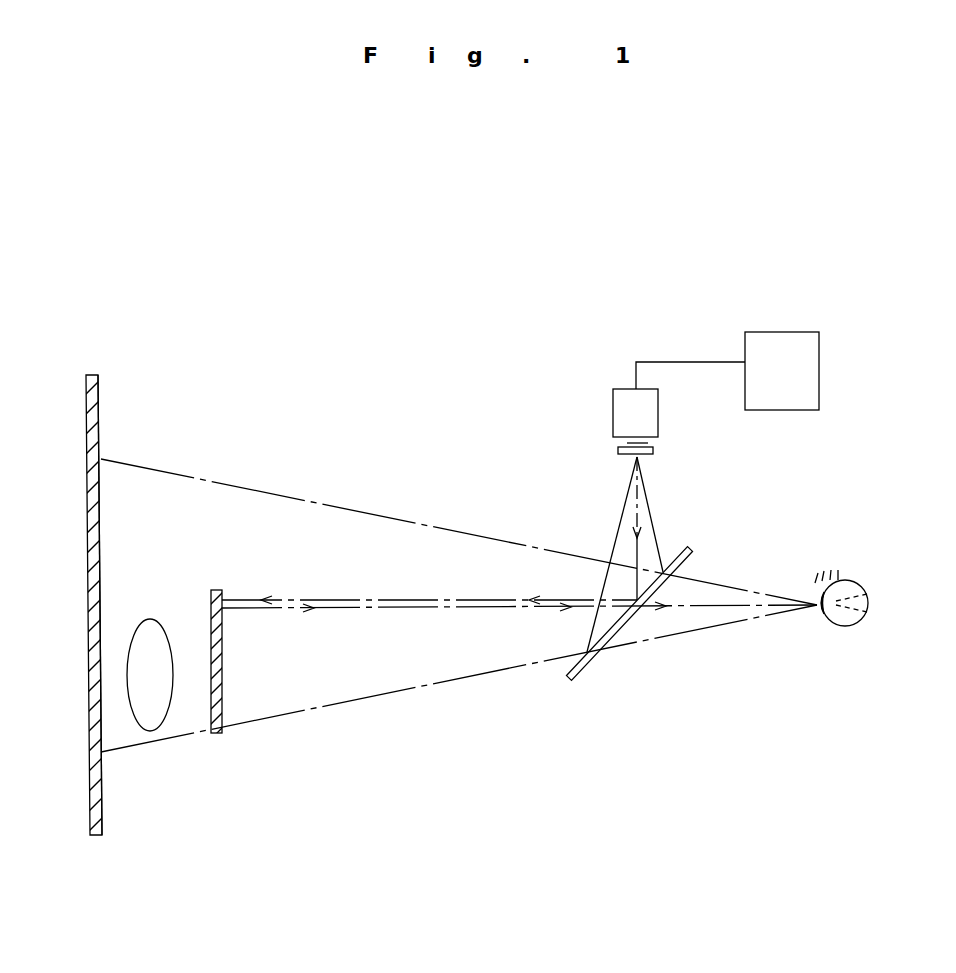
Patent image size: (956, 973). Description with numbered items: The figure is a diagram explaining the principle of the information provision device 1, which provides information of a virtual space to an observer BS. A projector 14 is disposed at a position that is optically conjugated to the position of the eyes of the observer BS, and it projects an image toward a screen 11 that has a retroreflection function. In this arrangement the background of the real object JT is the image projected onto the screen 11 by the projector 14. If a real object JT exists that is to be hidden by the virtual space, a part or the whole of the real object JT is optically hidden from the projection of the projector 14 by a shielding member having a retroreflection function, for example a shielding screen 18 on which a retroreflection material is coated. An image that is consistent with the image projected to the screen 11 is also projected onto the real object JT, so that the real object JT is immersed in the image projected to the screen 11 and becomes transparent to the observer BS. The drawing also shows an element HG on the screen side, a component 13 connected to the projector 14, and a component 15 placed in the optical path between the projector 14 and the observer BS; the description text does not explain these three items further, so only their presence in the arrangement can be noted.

The information provision device 1 is at (377, 323).
The screen 11 is at (98, 408).
The hologram HG is at (98, 563).
The real object JT is at (153, 722).
The shielding screen 18 is at (222, 707).
The projector 14 is at (618, 409).
The controller 13 is at (801, 410).
The beam splitter 15 is at (690, 547).
The observer BS is at (845, 626).